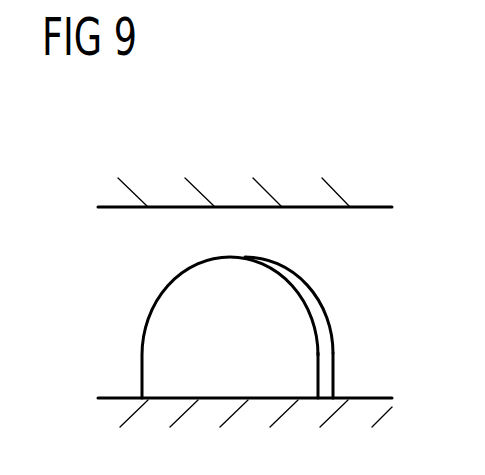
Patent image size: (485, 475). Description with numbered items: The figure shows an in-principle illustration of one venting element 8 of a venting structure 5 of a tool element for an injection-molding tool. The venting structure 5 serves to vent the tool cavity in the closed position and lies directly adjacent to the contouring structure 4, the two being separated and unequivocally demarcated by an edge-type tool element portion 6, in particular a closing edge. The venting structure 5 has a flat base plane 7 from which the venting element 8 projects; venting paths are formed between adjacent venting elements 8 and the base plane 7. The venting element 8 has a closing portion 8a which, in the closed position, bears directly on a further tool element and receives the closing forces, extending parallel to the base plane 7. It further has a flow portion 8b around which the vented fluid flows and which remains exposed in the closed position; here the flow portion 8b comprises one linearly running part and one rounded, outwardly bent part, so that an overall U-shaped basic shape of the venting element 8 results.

The contouring structure 4 is at (371, 151).
The venting structure 5 is at (175, 231).
The tool element portion 6 is at (262, 207).
The base plane 7 is at (385, 307).
The venting element 8 is at (139, 298).
The closing portion 8a is at (302, 365).
The flow portion 8b is at (292, 283).